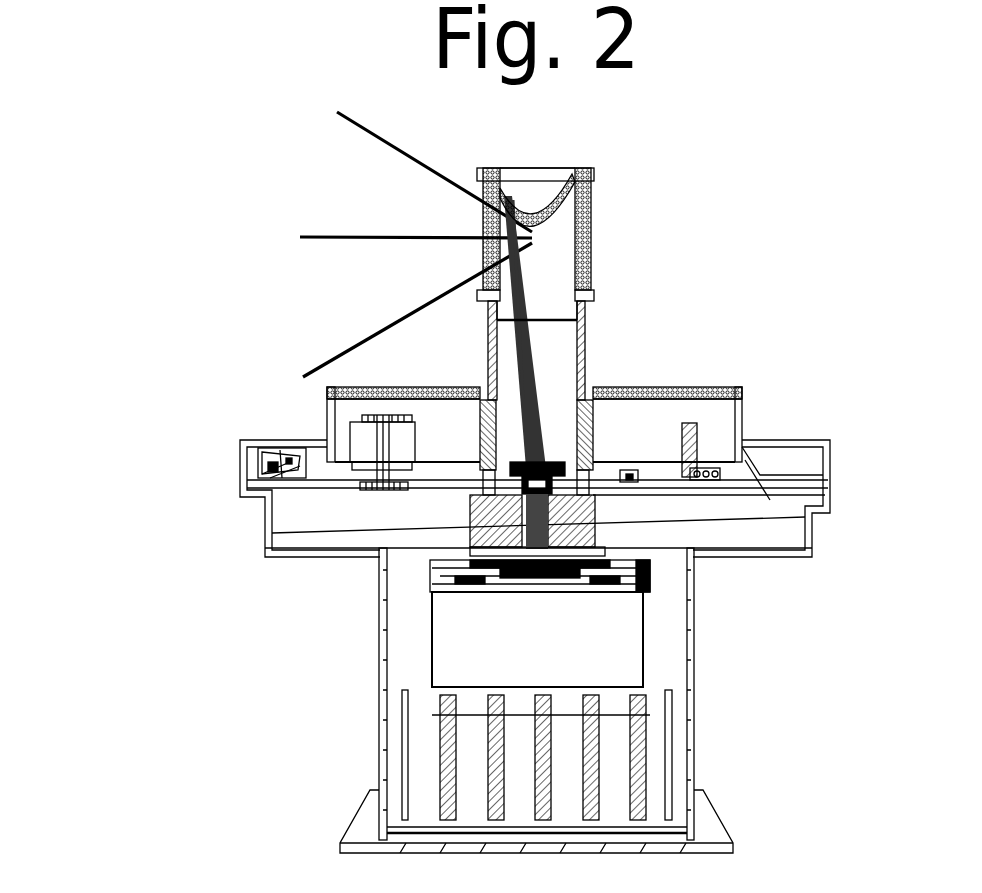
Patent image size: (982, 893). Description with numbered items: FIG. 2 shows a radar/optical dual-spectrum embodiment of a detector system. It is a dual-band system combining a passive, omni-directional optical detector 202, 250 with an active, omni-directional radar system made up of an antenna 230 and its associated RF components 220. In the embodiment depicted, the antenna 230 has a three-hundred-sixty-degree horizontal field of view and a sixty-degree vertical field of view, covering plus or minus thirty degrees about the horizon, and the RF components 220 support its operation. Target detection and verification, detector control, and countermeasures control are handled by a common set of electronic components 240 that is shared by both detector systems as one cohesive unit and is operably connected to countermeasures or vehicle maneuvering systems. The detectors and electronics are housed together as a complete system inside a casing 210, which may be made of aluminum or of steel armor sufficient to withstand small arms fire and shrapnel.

The passive omni-directional optical detector 202 is at (560, 239).
The casing 210 is at (693, 655).
The RF components 220 is at (378, 492).
The antenna 230 is at (270, 447).
The common set of electronic components 240 is at (645, 762).
The passive omni-directional optical detector 250 is at (595, 525).